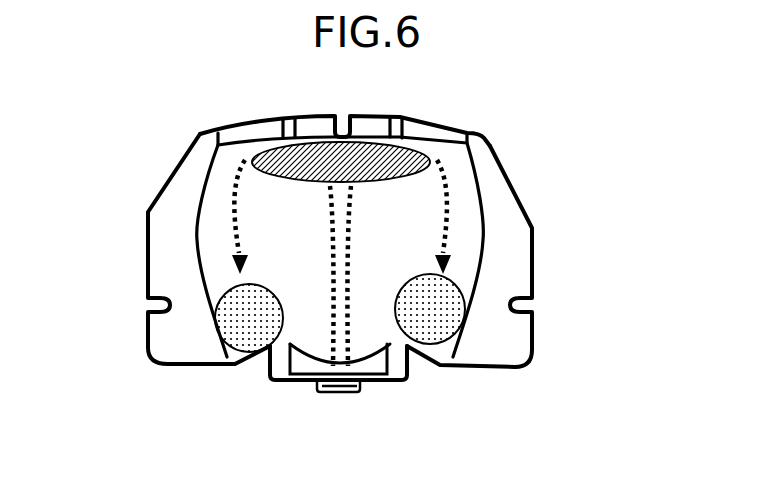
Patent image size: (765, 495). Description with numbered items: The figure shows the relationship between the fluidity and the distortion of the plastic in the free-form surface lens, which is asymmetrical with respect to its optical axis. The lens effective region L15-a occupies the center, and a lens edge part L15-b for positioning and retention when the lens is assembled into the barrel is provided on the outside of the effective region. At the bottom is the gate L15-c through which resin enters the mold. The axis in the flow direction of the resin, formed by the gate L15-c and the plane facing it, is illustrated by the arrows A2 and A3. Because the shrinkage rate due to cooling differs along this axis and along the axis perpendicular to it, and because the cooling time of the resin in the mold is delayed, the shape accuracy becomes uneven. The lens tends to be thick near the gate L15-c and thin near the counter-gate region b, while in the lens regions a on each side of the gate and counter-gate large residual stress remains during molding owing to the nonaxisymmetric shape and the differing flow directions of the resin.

The resin flow direction axis A3 is at (227, 210).
The resin flow direction axis A2 is at (440, 213).
The lens effective region L15-a is at (183, 293).
The lens edge part L15-b is at (510, 287).
The gate L15-c is at (338, 392).
The lens region a is at (340, 313).
The counter-gate region b is at (341, 163).